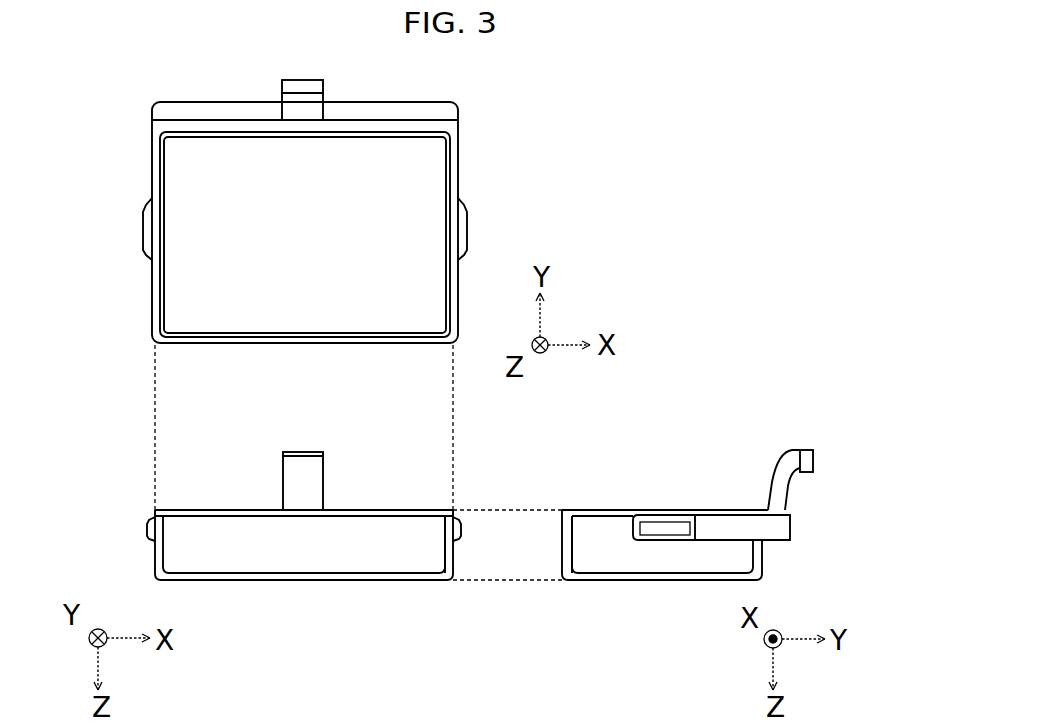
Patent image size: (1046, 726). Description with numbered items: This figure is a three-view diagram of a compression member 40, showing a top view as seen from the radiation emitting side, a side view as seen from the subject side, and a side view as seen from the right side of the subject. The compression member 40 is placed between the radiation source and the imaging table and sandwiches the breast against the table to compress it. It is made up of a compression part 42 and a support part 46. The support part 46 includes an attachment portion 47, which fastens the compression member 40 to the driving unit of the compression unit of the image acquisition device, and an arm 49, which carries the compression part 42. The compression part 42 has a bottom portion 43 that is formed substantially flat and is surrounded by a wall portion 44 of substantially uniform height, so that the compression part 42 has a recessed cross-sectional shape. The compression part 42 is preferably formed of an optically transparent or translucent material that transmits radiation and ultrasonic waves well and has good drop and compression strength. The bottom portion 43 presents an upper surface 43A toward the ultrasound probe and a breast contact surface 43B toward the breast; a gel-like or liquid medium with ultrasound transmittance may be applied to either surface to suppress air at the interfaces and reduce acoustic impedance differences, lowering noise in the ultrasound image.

The compression member 40 is at (745, 90).
The compression part 42 is at (148, 325).
The bottom portion 43 is at (333, 318).
The upper surface 43A is at (392, 567).
The breast contact surface 43B is at (387, 575).
The wall portion 44 is at (200, 338).
The support part 46 is at (470, 172).
The attachment portion 47 is at (325, 84).
The arm 49 is at (465, 230).